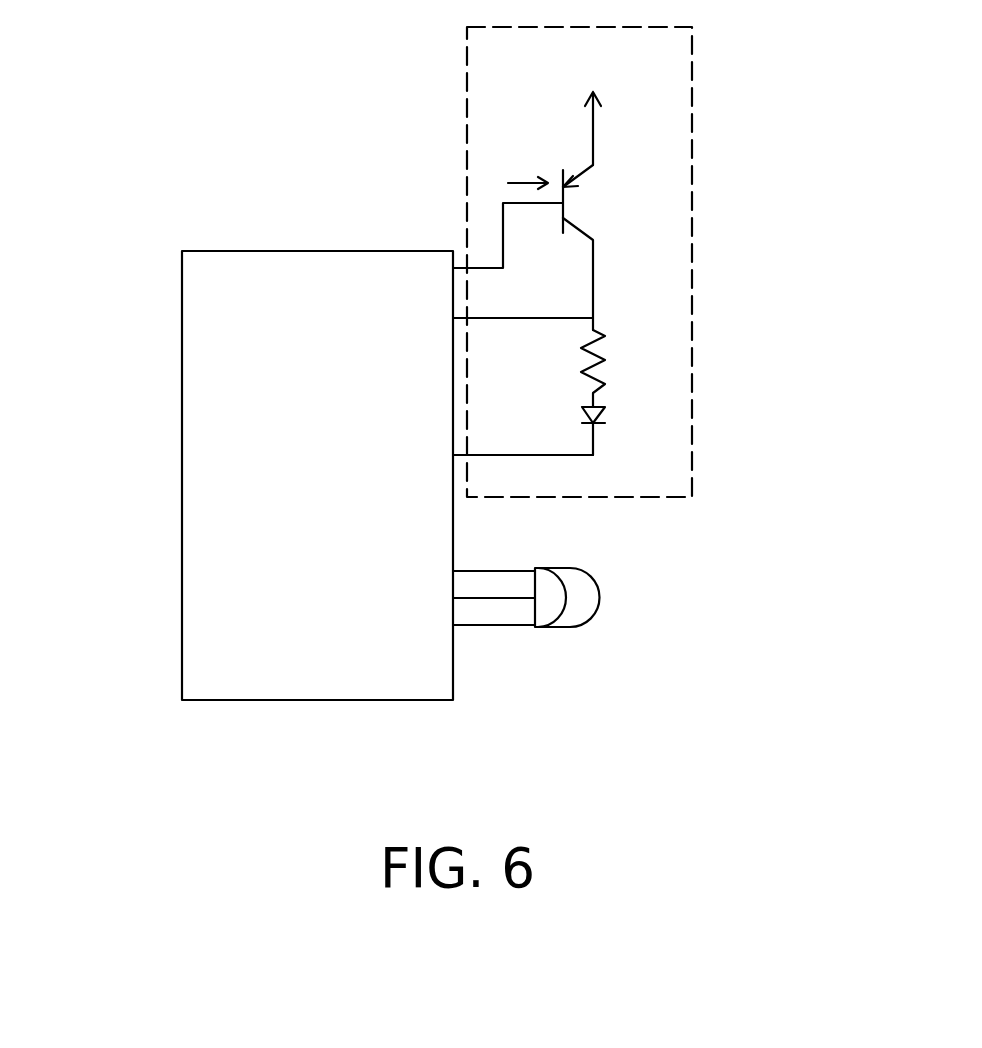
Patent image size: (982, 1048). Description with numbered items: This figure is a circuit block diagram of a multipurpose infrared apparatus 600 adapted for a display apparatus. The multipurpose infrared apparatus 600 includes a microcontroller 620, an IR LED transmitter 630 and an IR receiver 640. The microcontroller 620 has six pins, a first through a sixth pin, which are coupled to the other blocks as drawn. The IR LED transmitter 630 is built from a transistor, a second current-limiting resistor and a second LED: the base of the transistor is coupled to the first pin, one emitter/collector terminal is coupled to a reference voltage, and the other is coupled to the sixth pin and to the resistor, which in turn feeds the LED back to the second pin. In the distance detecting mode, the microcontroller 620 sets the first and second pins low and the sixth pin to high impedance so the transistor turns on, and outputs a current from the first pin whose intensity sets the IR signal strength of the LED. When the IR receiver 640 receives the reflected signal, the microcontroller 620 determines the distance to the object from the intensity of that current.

The multipurpose infrared apparatus 600 is at (463, 412).
The microcontroller 620 is at (233, 285).
The IR LED transmitter 630 is at (693, 262).
The IR receiver 640 is at (577, 597).